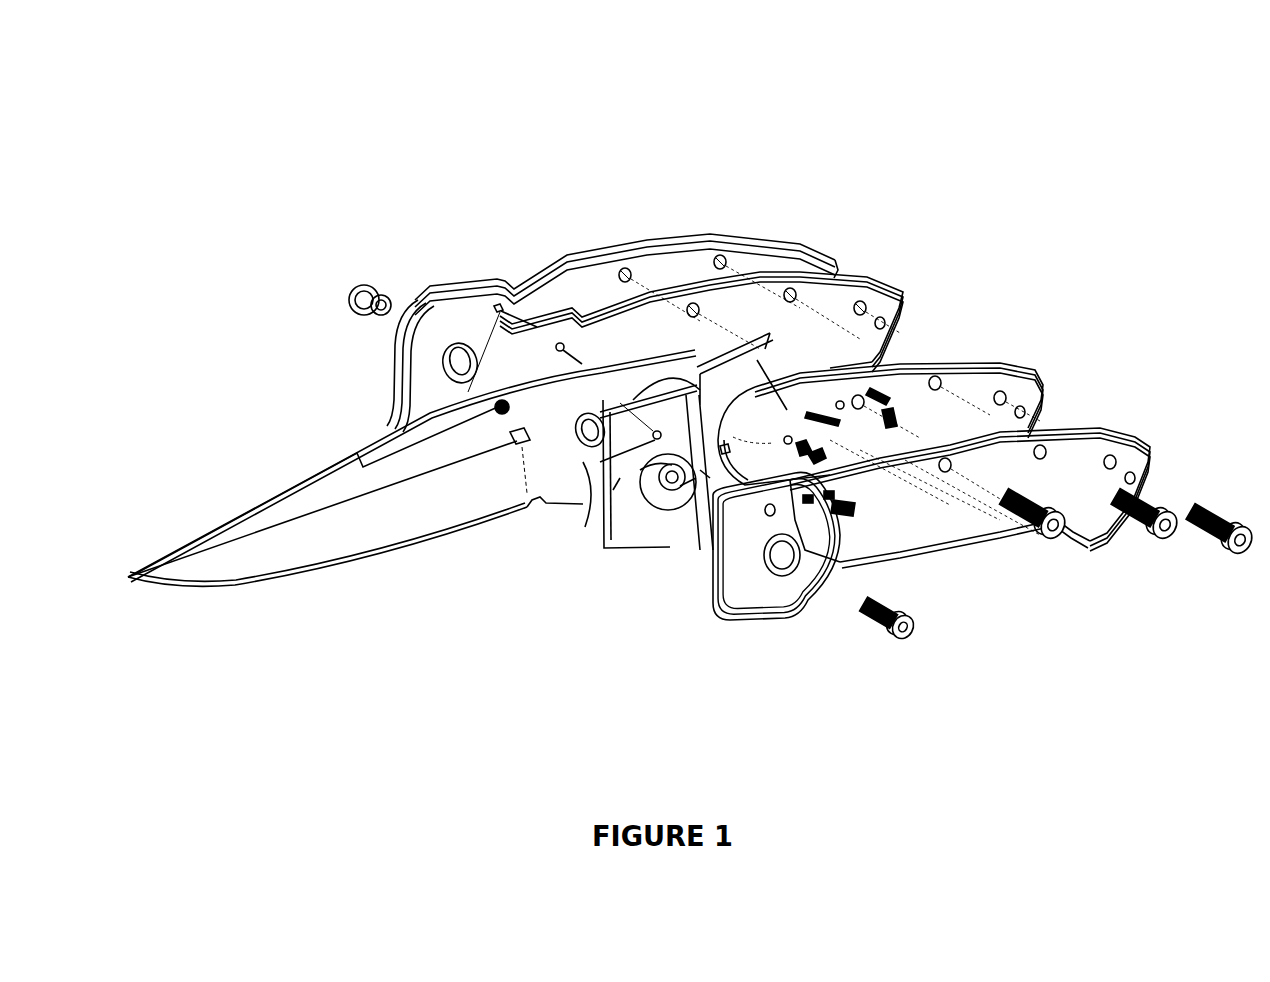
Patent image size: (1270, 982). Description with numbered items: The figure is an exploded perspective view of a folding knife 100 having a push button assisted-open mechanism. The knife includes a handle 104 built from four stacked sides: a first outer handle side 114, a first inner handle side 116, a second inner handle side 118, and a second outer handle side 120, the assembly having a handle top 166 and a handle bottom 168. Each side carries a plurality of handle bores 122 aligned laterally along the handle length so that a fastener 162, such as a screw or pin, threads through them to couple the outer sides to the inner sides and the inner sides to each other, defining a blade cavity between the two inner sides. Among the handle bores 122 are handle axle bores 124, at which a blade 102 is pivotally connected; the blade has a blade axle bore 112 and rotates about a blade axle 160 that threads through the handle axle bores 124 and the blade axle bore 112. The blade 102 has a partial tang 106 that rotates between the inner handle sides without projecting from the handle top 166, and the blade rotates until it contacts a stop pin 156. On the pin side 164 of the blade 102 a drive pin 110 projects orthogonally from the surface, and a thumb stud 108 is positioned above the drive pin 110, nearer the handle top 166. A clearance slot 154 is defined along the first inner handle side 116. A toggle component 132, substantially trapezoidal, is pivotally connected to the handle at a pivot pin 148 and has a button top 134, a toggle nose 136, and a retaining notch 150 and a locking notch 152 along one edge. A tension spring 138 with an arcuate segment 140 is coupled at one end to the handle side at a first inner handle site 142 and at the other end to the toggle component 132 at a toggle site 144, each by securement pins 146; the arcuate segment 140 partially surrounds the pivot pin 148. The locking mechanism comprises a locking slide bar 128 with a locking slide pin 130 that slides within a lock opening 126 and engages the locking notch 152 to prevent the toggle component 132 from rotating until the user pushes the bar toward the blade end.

The folding knife 100 is at (176, 128).
The blade 102 is at (228, 583).
The handle 104 is at (1091, 256).
The tang 106 is at (585, 470).
The thumb stud 108 is at (496, 403).
The drive pin 110 is at (517, 440).
The blade axle bore 112 is at (590, 428).
The first outer handle side 114 is at (1123, 430).
The first inner handle side 116 is at (1000, 362).
The second inner handle side 118 is at (858, 278).
The second outer handle side 120 is at (625, 238).
The handle bores 122 is at (1040, 447).
The handle axle bores 124 is at (460, 358).
The lock opening 126 is at (810, 500).
The locking slide bar 128 is at (848, 510).
The locking slide pin 130 is at (834, 496).
The toggle component 132 is at (763, 387).
The button top 134 is at (717, 370).
The toggle nose 136 is at (650, 472).
The spring 138 is at (858, 400).
The arcuate segment 140 is at (786, 437).
The first inner handle site 142 is at (884, 394).
The toggle site 144 is at (723, 446).
The securement pins 146 is at (899, 420).
The pivot pin 148 is at (814, 452).
The retaining notch 150 is at (687, 480).
The locking notch 152 is at (698, 412).
The clearance slot 154 is at (613, 470).
The stop pin 156 is at (710, 478).
The blade axle 160 is at (387, 290).
The fasteners 162 is at (1052, 542).
The pin side 164 is at (327, 562).
The handle top 166 is at (478, 256).
The handle bottom 168 is at (808, 622).